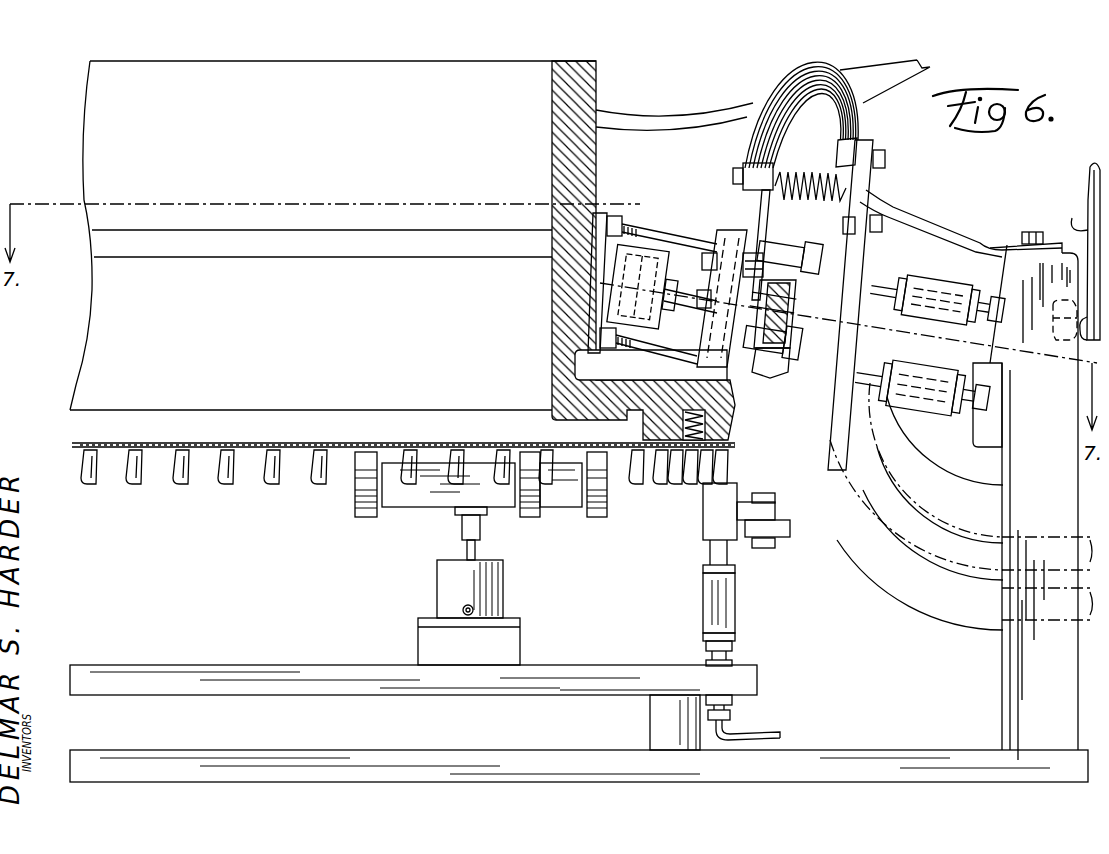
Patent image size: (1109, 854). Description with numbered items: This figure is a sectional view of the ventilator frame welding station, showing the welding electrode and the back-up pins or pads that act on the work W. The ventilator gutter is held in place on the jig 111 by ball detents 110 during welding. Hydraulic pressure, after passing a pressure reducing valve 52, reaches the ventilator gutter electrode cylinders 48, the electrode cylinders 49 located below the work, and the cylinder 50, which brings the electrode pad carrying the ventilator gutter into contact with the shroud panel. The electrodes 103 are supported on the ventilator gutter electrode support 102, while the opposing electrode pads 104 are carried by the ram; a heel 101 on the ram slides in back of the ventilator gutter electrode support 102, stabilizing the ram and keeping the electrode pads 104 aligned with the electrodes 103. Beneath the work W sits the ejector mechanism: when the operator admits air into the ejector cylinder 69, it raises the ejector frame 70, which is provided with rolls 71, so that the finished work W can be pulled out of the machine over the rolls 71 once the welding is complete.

The ventilator gutter electrode cylinders 48 is at (930, 292).
The electrode cylinders 49 is at (730, 595).
The cylinder 50 is at (648, 246).
The pressure reducing valve 52 is at (773, 131).
The ejector cylinder 69 is at (440, 583).
The ejector frame 70 is at (420, 500).
The rolls 71 is at (357, 517).
The heel 101 is at (1061, 251).
The ventilator gutter electrode support 102 is at (1020, 661).
The electrodes 103 is at (805, 276).
The electrode pads 104 is at (712, 262).
The ball detents 110 is at (772, 393).
The jig 111 is at (787, 380).
The work W is at (433, 440).